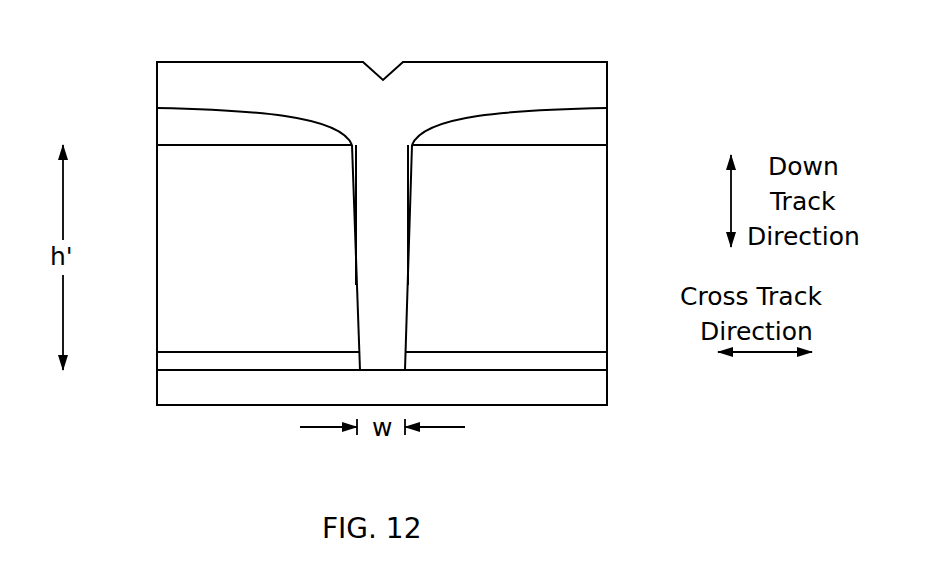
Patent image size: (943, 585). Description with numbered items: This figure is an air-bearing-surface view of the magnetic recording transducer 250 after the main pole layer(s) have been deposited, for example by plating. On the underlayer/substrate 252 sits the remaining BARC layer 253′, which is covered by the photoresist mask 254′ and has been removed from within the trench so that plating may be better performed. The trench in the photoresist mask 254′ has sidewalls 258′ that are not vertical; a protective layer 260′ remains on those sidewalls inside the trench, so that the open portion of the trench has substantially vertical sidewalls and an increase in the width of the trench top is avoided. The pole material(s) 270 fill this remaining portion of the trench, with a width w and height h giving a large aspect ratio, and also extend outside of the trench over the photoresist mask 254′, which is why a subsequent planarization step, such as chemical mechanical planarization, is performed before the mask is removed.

The transducer 250 is at (406, 45).
The protective layer 260′ is at (157, 108).
The pole materials 270 is at (383, 202).
The photoresist mask 254′ is at (382, 257).
The sidewalls 258′ is at (323, 313).
The BARC layer 253′ is at (157, 357).
The underlayer/substrate 252 is at (382, 387).